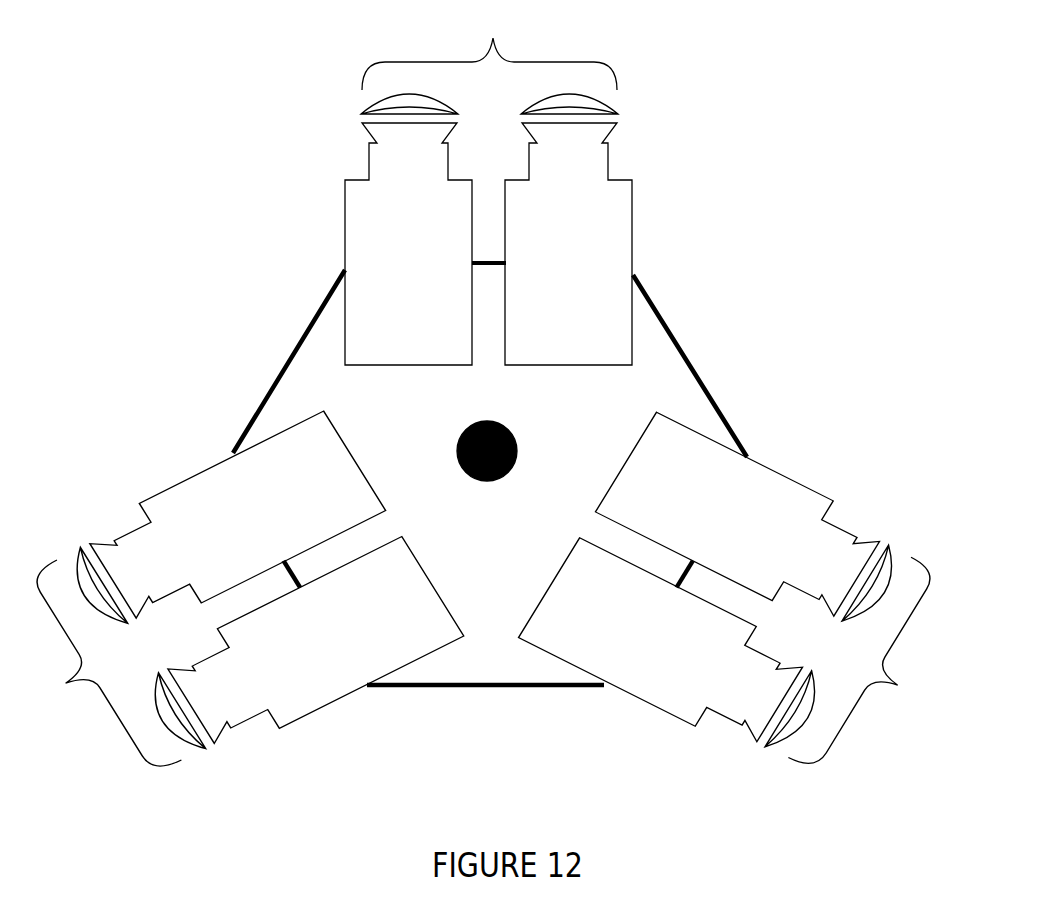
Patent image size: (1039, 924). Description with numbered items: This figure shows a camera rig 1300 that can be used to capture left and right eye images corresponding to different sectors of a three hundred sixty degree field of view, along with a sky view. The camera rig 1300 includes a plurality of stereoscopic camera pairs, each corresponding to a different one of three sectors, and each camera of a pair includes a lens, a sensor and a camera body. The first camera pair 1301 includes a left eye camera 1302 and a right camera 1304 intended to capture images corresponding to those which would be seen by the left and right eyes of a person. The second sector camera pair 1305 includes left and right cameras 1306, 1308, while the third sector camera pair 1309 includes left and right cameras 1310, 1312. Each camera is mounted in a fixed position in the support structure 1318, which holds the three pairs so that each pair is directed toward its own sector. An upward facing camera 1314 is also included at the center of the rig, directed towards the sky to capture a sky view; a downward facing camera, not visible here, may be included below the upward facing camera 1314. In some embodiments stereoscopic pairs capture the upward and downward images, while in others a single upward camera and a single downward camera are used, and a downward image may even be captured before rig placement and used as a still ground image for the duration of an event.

The camera rig 1300 is at (121, 24).
The first camera pair 1301 is at (489, 54).
The left eye camera 1302 is at (454, 181).
The right camera 1304 is at (620, 181).
The second sector camera pair 1305 is at (874, 669).
The left camera 1306 is at (802, 484).
The right camera 1308 is at (670, 712).
The third sector camera pair 1309 is at (93, 673).
The left camera 1310 is at (295, 713).
The right camera 1312 is at (162, 490).
The upward facing camera 1314 is at (510, 432).
The support structure 1318 is at (688, 366).